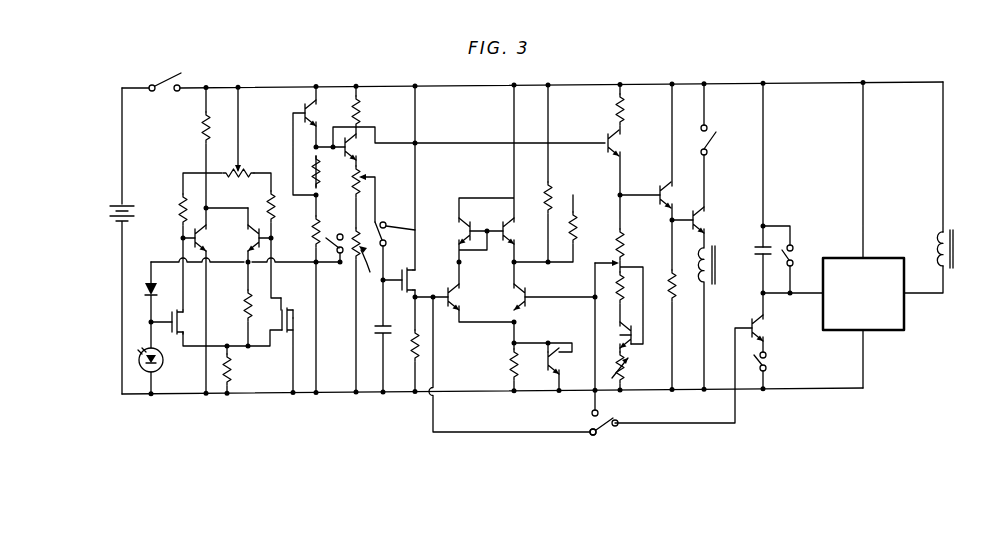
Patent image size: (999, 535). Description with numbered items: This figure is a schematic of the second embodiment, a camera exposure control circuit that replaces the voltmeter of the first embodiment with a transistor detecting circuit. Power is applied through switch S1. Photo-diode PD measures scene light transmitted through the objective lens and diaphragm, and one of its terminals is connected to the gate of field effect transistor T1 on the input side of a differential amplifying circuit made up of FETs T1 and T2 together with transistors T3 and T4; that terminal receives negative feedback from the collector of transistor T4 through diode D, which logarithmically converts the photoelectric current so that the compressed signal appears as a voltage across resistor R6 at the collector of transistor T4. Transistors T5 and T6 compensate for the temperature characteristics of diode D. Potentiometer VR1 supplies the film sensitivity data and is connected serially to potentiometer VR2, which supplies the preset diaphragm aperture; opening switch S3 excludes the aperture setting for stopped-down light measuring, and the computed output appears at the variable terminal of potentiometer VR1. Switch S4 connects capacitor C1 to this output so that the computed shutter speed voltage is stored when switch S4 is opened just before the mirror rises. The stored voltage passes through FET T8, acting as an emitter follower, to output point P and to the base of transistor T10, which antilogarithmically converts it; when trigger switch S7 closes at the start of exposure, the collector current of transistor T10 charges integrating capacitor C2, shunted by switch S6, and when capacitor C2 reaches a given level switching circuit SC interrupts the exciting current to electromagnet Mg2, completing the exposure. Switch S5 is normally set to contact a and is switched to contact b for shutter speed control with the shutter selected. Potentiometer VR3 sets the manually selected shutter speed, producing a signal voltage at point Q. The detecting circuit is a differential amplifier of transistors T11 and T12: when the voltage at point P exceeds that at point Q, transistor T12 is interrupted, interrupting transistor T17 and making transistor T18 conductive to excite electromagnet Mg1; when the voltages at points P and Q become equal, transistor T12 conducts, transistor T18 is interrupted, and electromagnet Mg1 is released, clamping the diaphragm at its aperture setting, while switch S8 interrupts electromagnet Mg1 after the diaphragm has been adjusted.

The switch S1 is at (174, 81).
The transistor T3 is at (211, 229).
The transistor T4 is at (244, 255).
The diode D is at (144, 285).
The photo-diode PD is at (162, 366).
The field effect transistor T1 is at (190, 323).
The resistor R6 is at (245, 292).
The field effect transistor T2 is at (283, 311).
The transistor T5 is at (298, 114).
The transistor T6 is at (346, 157).
The potentiometer VR1 is at (361, 177).
The switch S3 is at (338, 234).
The potentiometer VR2 is at (349, 262).
The switch S4 is at (390, 228).
The capacitor C1 is at (372, 328).
The field effect transistor T8 is at (408, 278).
The output point P is at (435, 308).
The transistor T11 is at (463, 292).
The transistor T12 is at (512, 307).
The point Q is at (592, 298).
The potentiometer VR3 is at (635, 306).
The transistor T17 is at (660, 193).
The switch S8 is at (712, 135).
The transistor T18 is at (700, 227).
The electromagnet Mg1 is at (712, 280).
The integrating capacitor C2 is at (754, 254).
The switch S6 is at (792, 258).
The transistor T10 is at (762, 325).
The trigger switch S7 is at (773, 352).
The switch S5 is at (616, 427).
The contact a is at (596, 436).
The contact b is at (592, 414).
The switching circuit SC is at (863, 294).
The electromagnet Mg2 is at (940, 232).